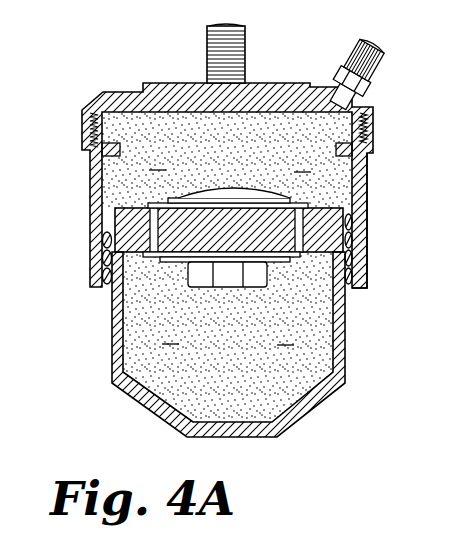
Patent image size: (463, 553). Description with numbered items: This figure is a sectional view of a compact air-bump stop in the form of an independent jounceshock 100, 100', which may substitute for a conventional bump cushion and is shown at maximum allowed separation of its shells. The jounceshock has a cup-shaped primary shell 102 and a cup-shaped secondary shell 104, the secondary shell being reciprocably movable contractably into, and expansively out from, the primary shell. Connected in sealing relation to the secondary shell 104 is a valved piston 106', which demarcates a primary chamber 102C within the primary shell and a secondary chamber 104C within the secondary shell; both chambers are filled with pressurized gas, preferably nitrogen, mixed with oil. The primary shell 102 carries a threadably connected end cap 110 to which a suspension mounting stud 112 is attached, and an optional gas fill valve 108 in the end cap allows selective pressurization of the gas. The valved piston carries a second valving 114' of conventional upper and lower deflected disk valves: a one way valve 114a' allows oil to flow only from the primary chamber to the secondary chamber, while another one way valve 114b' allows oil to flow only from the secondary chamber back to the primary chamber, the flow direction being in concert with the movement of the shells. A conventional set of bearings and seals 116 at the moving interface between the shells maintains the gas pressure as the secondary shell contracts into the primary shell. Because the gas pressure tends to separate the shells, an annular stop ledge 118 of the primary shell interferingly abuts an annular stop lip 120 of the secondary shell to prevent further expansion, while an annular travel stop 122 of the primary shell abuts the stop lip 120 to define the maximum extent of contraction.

The independent jounceshock 100 is at (239, 218).
The independent jounceshock 100' is at (410, 189).
The primary shell 102 is at (84, 170).
The primary chamber 102C is at (172, 118).
The secondary shell 104 is at (107, 354).
The secondary chamber 104C is at (283, 390).
The valved piston 106' is at (393, 131).
The gas fill valve 108 is at (345, 90).
The end cap 110 is at (280, 82).
The suspension mounting stud 112 is at (207, 27).
The second valving 114' is at (228, 221).
The one way valve 114a' is at (97, 266).
The one way valve 114b' is at (357, 266).
The set of bearings and seals 116 is at (360, 277).
The annular stop ledge 118 is at (366, 203).
The annular stop lip 120 is at (105, 228).
The annular travel stop 122 is at (83, 126).